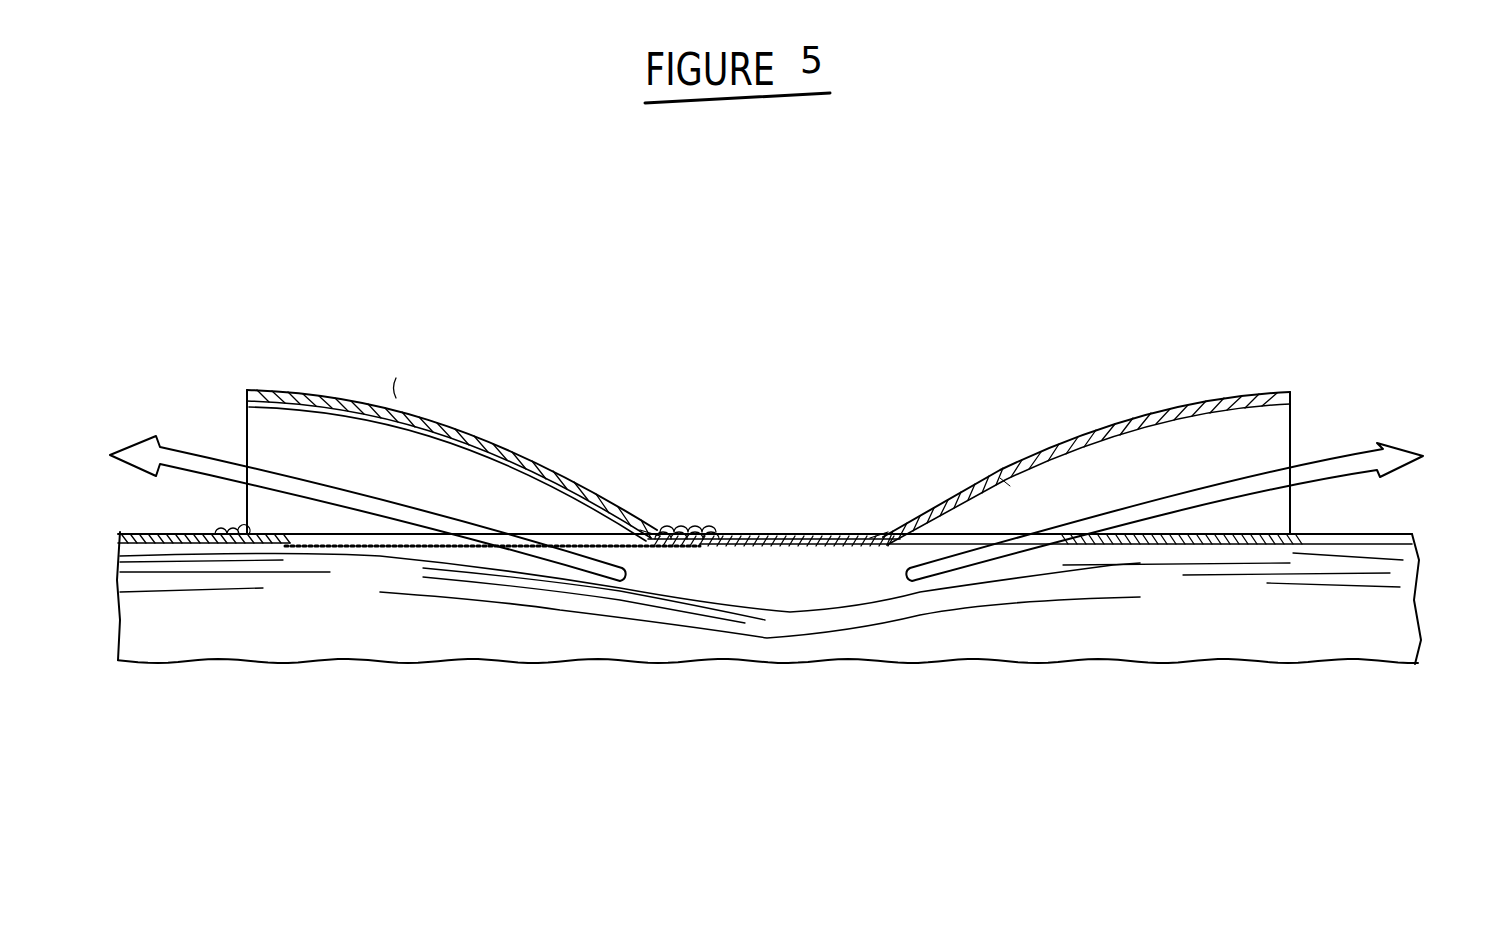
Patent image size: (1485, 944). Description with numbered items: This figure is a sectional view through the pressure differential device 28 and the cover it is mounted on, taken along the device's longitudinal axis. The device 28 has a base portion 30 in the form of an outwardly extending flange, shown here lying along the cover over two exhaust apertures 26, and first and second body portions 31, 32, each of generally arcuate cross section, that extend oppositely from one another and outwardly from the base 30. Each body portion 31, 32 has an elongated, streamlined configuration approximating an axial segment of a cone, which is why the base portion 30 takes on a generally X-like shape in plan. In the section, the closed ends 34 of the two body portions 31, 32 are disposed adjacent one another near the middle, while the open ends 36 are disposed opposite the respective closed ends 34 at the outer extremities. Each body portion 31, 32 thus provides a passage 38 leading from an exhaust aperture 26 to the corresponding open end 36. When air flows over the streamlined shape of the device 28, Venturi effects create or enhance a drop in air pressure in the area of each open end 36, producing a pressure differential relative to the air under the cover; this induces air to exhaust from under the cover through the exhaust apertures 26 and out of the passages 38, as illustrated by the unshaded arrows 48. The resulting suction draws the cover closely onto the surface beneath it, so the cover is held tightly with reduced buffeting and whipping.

The exhaust aperture 26 is at (291, 547).
The pressure differential device 28 is at (407, 411).
The base portion 30 is at (827, 530).
The first body portion 31 is at (396, 342).
The second body portion 32 is at (1080, 423).
The closed end 34 is at (655, 517).
The open end 36 is at (246, 392).
The passage 38 is at (258, 424).
The unshaded arrow 48 is at (253, 468).